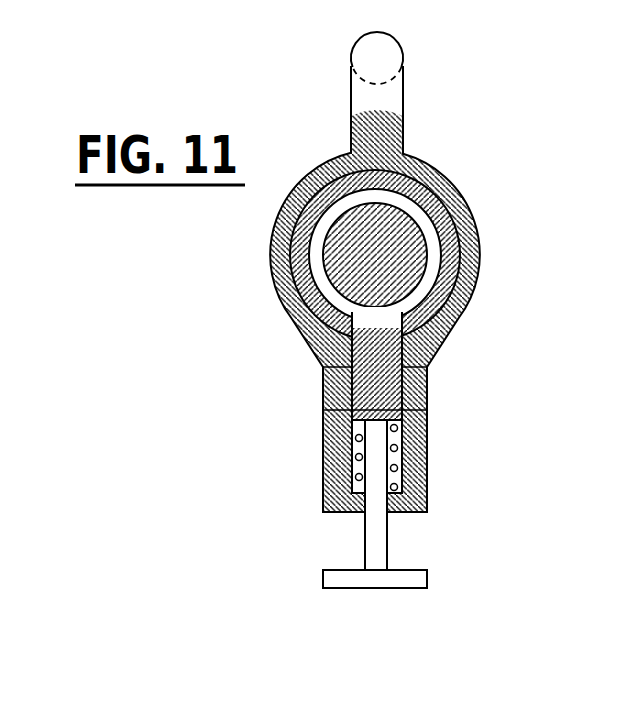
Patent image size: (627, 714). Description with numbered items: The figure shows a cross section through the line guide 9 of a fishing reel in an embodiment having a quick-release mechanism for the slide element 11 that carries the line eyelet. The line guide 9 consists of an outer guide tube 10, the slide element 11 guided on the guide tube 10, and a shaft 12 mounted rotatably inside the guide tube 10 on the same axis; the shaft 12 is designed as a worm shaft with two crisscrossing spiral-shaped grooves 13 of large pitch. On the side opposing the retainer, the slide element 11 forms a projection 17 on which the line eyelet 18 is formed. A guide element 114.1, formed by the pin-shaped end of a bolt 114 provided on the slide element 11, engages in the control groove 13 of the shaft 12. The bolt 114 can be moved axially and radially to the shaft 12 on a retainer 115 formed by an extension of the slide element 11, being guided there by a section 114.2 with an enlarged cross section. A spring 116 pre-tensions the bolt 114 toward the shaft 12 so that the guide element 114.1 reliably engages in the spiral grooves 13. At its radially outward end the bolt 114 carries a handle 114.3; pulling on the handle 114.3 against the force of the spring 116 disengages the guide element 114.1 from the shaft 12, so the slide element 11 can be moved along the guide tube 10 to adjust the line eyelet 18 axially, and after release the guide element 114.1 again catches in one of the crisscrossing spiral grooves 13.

The line guide 9 is at (401, 315).
The guide tube 10 is at (453, 272).
The slide element 11 is at (433, 165).
The shaft 12 is at (417, 258).
The spiral-shaped grooves 13 is at (313, 323).
The projection 17 is at (405, 100).
The line eyelet 18 is at (392, 57).
The bolt 114 is at (427, 410).
The guide element 114.1 is at (385, 322).
The section with enlarged cross section 114.2 is at (323, 410).
The handle 114.3 is at (410, 577).
The retainer 115 is at (427, 448).
The spring 116 is at (397, 473).